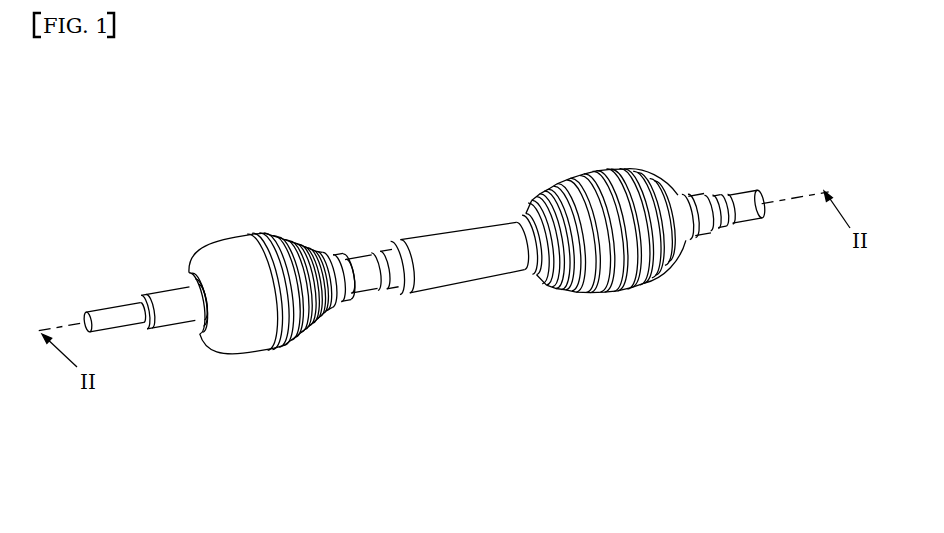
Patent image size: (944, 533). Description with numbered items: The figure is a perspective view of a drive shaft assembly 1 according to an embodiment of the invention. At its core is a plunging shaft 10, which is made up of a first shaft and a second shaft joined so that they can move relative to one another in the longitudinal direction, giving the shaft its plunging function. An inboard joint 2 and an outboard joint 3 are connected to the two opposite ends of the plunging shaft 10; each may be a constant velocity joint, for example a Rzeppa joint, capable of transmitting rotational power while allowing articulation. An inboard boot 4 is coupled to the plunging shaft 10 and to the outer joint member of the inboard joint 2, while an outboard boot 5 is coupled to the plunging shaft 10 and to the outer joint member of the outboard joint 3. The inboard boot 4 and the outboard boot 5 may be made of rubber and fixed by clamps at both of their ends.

The drive shaft assembly 1 is at (171, 128).
The inboard joint 2 is at (660, 297).
The outboard joint 3 is at (282, 372).
The inboard boot 4 is at (602, 280).
The outboard boot 5 is at (263, 233).
The plunging shaft 10 is at (505, 208).